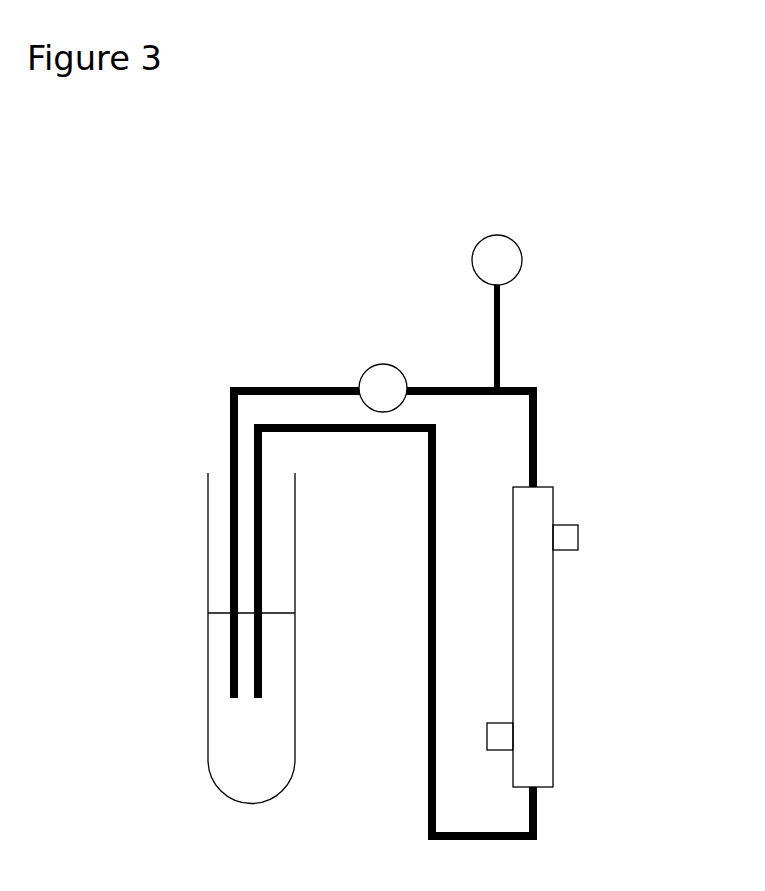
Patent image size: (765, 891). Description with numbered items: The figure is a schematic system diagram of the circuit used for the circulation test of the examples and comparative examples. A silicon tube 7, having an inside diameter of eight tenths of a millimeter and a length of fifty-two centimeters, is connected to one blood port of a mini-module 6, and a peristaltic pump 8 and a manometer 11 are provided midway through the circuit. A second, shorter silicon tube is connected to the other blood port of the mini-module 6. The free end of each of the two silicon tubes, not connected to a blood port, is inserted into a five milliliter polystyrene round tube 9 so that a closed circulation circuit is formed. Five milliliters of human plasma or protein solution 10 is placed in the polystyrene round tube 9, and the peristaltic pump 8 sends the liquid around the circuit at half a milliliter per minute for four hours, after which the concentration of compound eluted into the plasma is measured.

The mini-module 6 is at (561, 632).
The silicon tube 7 is at (544, 440).
The peristaltic pump 8 is at (383, 352).
The polystyrene round tube 9 is at (194, 663).
The plasma or protein solution 10 is at (232, 762).
The manometer 11 is at (532, 258).